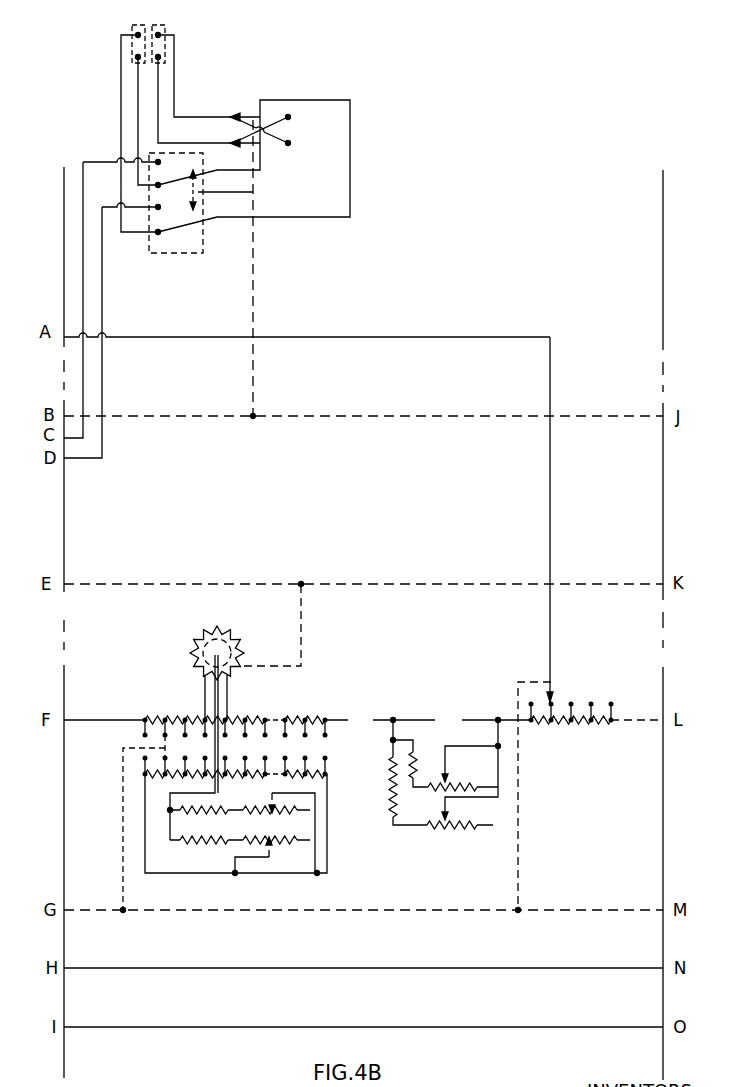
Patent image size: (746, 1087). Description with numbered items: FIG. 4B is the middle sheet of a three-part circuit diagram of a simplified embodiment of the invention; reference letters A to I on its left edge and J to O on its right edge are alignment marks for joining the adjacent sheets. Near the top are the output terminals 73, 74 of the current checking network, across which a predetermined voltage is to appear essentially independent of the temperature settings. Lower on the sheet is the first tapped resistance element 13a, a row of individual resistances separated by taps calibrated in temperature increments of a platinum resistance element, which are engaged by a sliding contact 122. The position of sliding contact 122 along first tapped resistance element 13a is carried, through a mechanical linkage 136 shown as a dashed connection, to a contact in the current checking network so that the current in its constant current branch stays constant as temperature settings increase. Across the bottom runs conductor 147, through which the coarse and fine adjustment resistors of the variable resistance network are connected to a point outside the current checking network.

The output terminal 73 is at (158, 36).
The output terminal 74 is at (160, 60).
The sliding contact 122 is at (577, 519).
The first tapped resistance element 13a is at (605, 730).
The mechanical linkage 136 is at (520, 852).
The conductor 147 is at (407, 968).